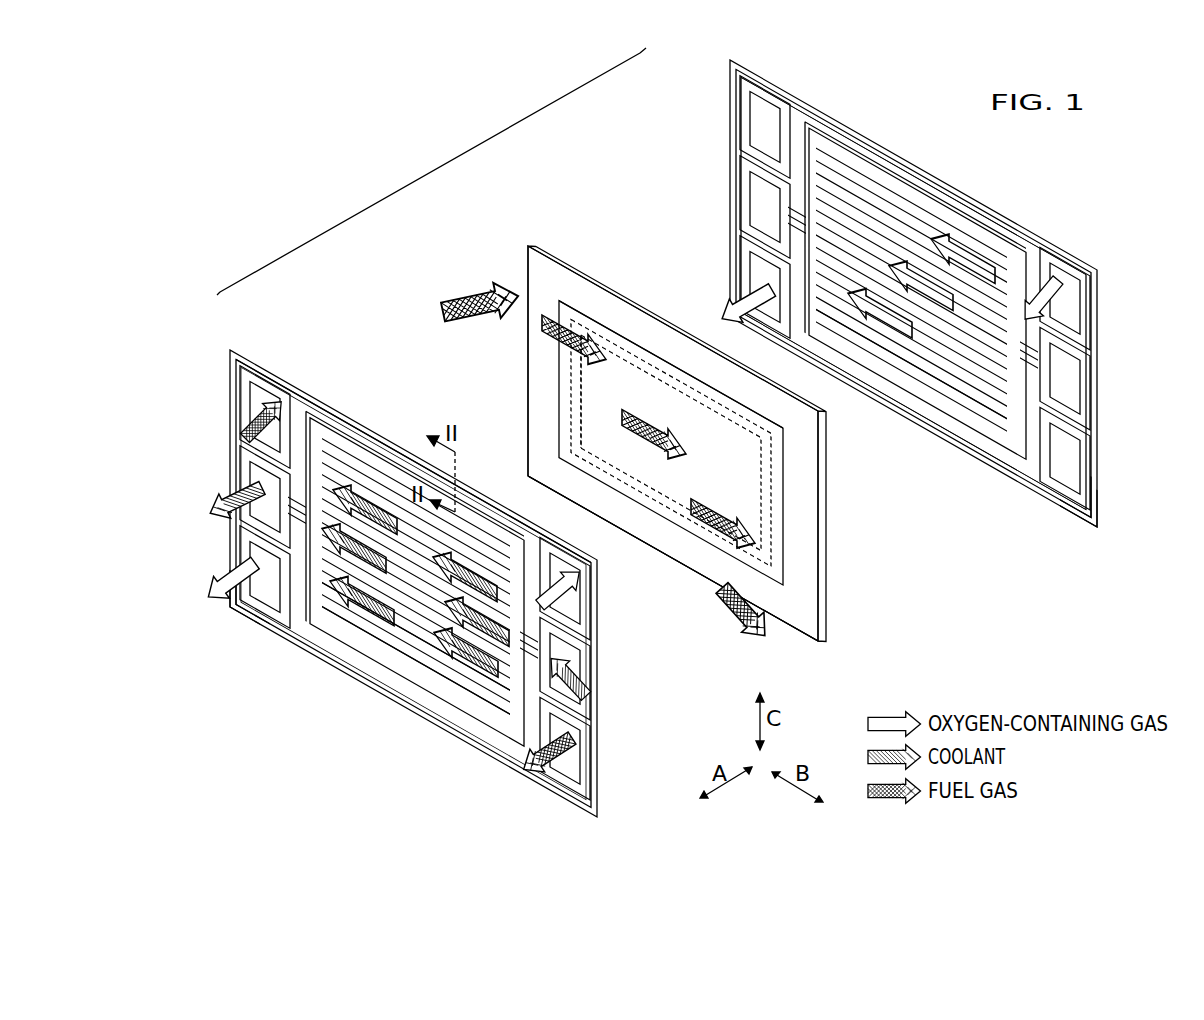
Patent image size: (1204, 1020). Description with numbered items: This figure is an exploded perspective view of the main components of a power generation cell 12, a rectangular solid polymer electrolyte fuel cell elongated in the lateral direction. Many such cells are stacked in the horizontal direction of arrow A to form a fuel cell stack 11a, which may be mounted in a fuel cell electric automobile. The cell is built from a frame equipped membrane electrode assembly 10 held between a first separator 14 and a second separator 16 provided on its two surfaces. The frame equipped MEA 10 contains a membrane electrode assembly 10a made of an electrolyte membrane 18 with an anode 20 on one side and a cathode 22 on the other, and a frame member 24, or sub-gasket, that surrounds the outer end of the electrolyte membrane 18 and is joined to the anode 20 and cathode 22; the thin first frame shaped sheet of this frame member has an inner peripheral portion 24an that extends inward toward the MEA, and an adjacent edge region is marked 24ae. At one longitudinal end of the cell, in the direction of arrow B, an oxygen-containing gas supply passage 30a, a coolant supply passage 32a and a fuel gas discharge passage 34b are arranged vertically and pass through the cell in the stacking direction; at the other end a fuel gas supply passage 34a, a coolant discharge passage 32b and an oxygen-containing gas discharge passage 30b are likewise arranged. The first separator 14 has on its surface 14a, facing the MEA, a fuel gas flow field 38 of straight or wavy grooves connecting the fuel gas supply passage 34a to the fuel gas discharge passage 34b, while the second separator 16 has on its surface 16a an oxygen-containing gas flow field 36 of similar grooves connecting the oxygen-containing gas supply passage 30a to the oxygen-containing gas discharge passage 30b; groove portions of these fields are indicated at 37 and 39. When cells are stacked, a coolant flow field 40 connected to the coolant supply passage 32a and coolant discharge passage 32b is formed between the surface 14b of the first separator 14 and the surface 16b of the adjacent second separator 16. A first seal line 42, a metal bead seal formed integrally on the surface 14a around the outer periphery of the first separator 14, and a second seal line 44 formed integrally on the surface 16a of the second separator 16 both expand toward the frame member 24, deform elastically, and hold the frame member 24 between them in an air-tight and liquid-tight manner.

The frame equipped membrane electrode assembly 10 is at (526, 246).
The membrane electrode assembly 10a is at (657, 512).
The fuel cell stack 11a is at (1100, 156).
The power generation cell 12 is at (433, 169).
The first separator 14 is at (247, 349).
The surface of the first separator 14a is at (248, 598).
The surface of the first separator 14b is at (278, 608).
The second separator 16 is at (729, 76).
The surface of the second separator 16a is at (1060, 496).
The surface of the second separator 16b is at (1080, 512).
The electrolyte membrane 18 is at (745, 493).
The anode 20 is at (568, 437).
The cathode 22 is at (785, 535).
The frame member 24 is at (584, 267).
The inner peripheral portion of the first frame shaped sheet 24an is at (641, 368).
The electrode edge 24ae is at (590, 406).
The oxygen-containing gas supply passage 30a is at (568, 608).
The oxygen-containing gas discharge passage 30b is at (258, 546).
The coolant supply passage 32a is at (573, 654).
The coolant discharge passage 32b is at (262, 478).
The fuel gas supply passage 34a is at (258, 402).
The fuel gas discharge passage 34b is at (573, 746).
The oxygen-containing gas flow field 36 is at (878, 198).
The flow grooves 37 is at (935, 385).
The fuel gas flow field 38 is at (371, 455).
The flow grooves 39 is at (428, 668).
The coolant flow field 40 is at (352, 628).
The first seal line 42 is at (342, 406).
The second seal line 44 is at (742, 212).